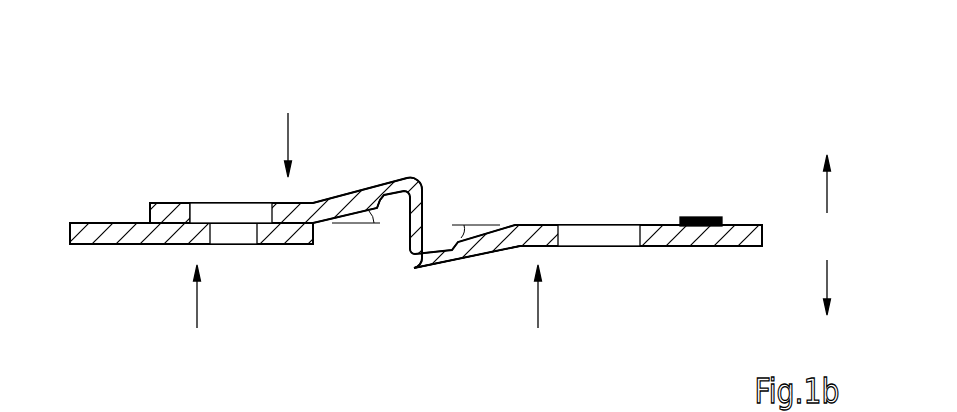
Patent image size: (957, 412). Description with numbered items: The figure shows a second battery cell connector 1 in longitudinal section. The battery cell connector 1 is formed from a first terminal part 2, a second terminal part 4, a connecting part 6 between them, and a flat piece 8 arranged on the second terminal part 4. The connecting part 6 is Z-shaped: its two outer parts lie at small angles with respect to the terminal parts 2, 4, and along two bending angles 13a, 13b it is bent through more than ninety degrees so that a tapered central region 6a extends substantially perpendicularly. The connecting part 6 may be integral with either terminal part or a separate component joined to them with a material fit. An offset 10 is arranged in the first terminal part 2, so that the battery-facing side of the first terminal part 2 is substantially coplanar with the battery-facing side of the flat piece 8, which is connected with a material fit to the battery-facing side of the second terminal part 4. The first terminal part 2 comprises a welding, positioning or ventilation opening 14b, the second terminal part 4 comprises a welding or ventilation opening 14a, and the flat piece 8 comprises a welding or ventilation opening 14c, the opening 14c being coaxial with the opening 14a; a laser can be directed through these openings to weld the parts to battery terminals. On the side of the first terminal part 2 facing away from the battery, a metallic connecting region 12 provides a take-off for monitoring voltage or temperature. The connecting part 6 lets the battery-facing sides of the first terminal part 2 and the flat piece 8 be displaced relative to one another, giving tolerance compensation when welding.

The battery cell connector 1 is at (628, 104).
The first terminal part 2 is at (733, 238).
The second terminal part 4 is at (163, 207).
The connecting part 6 is at (389, 119).
The central region of the connecting part 6a is at (409, 252).
The flat piece 8 is at (108, 236).
The offset 10 is at (468, 256).
The connecting region 12 is at (710, 218).
The bending angle 13a is at (398, 216).
The bending angle 13b is at (431, 233).
The welding opening or ventilation opening 14a is at (227, 208).
The welding opening, positioning opening or ventilation opening 14b is at (612, 237).
The welding opening or ventilation opening 14c is at (245, 235).